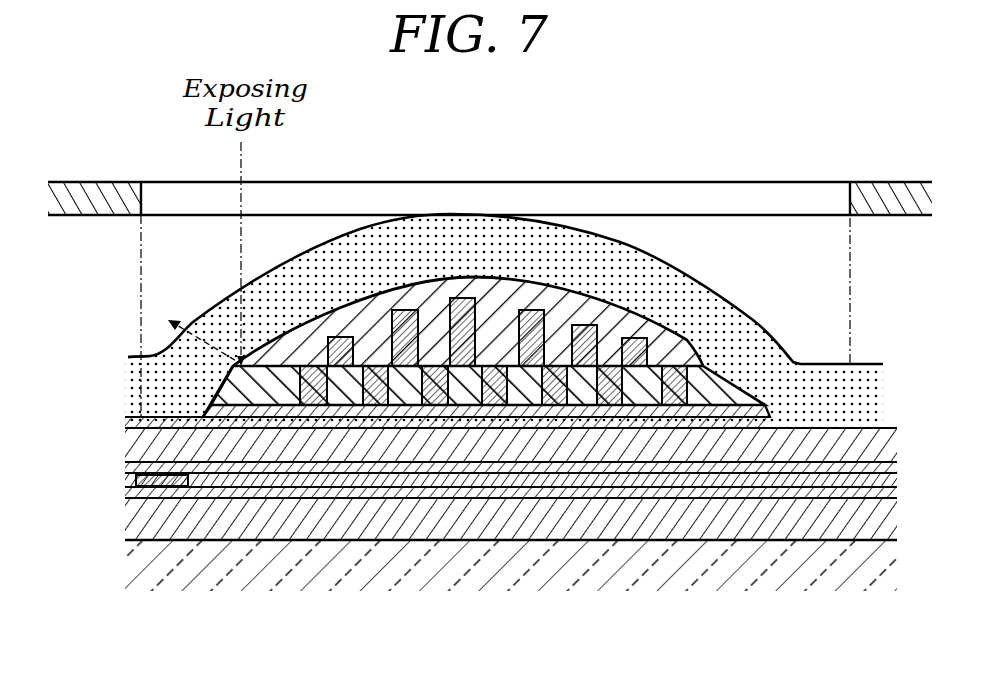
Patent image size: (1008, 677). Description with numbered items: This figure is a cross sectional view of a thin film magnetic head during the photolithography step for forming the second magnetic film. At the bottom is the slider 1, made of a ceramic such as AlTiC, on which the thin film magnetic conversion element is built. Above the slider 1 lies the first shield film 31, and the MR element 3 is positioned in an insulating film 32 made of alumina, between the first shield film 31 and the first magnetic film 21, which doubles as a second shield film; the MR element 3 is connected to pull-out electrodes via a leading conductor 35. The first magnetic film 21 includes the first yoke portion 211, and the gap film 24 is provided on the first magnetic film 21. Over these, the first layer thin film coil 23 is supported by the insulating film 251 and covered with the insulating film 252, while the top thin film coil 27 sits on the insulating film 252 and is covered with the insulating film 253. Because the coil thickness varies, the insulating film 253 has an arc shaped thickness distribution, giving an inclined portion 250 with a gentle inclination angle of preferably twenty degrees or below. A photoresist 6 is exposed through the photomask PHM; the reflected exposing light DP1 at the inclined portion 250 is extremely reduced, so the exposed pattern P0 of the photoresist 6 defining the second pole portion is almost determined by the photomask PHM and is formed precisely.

The photomask PHM is at (90, 196).
The photoresist 6 is at (446, 218).
The exposed pattern P0 is at (160, 367).
The reflected exposing light DP1 is at (197, 320).
The inclined portion 250 is at (472, 390).
The top thin film coil 27 is at (380, 300).
The insulating film 253 is at (557, 312).
The insulating film 252 is at (700, 370).
The insulating film 251 is at (726, 412).
The first layer thin film coil 23 is at (670, 405).
The gap film 24 is at (567, 425).
The first yoke portion 211 is at (500, 452).
The first magnetic film 21 is at (224, 472).
The leading conductor 35 is at (363, 488).
The MR element 3 is at (163, 488).
The insulating film 32 is at (300, 498).
The first shield film 31 is at (868, 525).
The slider 1 is at (810, 565).